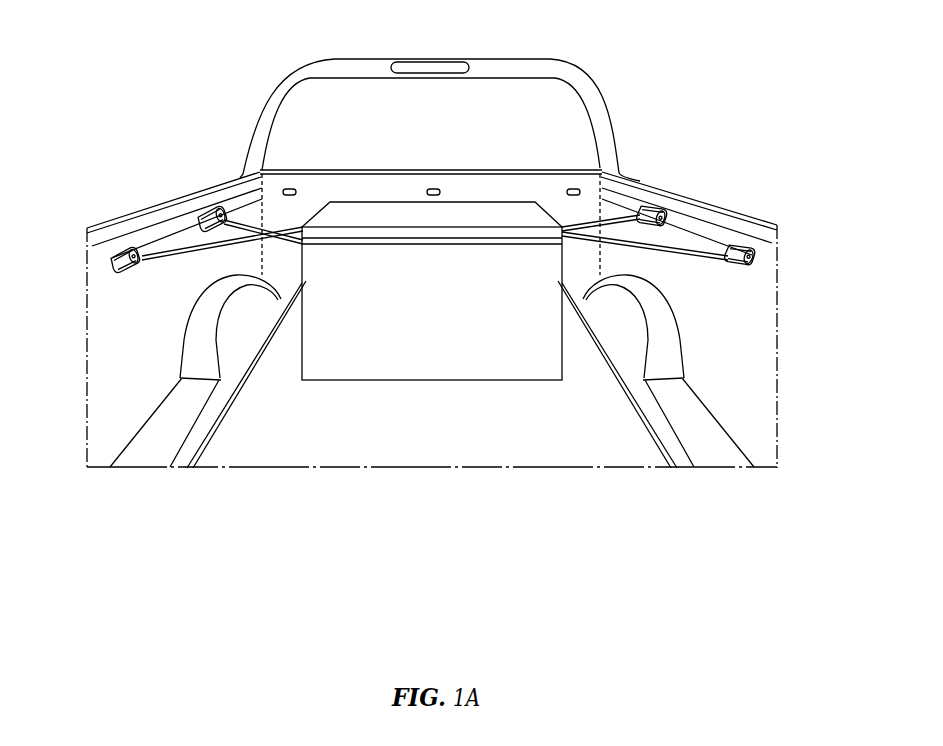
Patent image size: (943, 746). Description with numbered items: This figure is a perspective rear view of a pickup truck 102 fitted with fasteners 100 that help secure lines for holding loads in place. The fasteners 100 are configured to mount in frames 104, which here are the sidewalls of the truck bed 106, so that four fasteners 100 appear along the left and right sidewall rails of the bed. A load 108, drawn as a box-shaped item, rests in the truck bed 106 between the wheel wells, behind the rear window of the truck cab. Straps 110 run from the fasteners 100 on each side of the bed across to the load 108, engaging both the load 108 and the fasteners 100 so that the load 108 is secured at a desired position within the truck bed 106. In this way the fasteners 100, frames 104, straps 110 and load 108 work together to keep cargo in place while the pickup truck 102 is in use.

The fastener 100 is at (210, 210).
The pickup truck 102 is at (618, 37).
The frame 104 is at (107, 362).
The truck bed 106 is at (725, 191).
The load 108 is at (492, 357).
The strap 110 is at (151, 267).